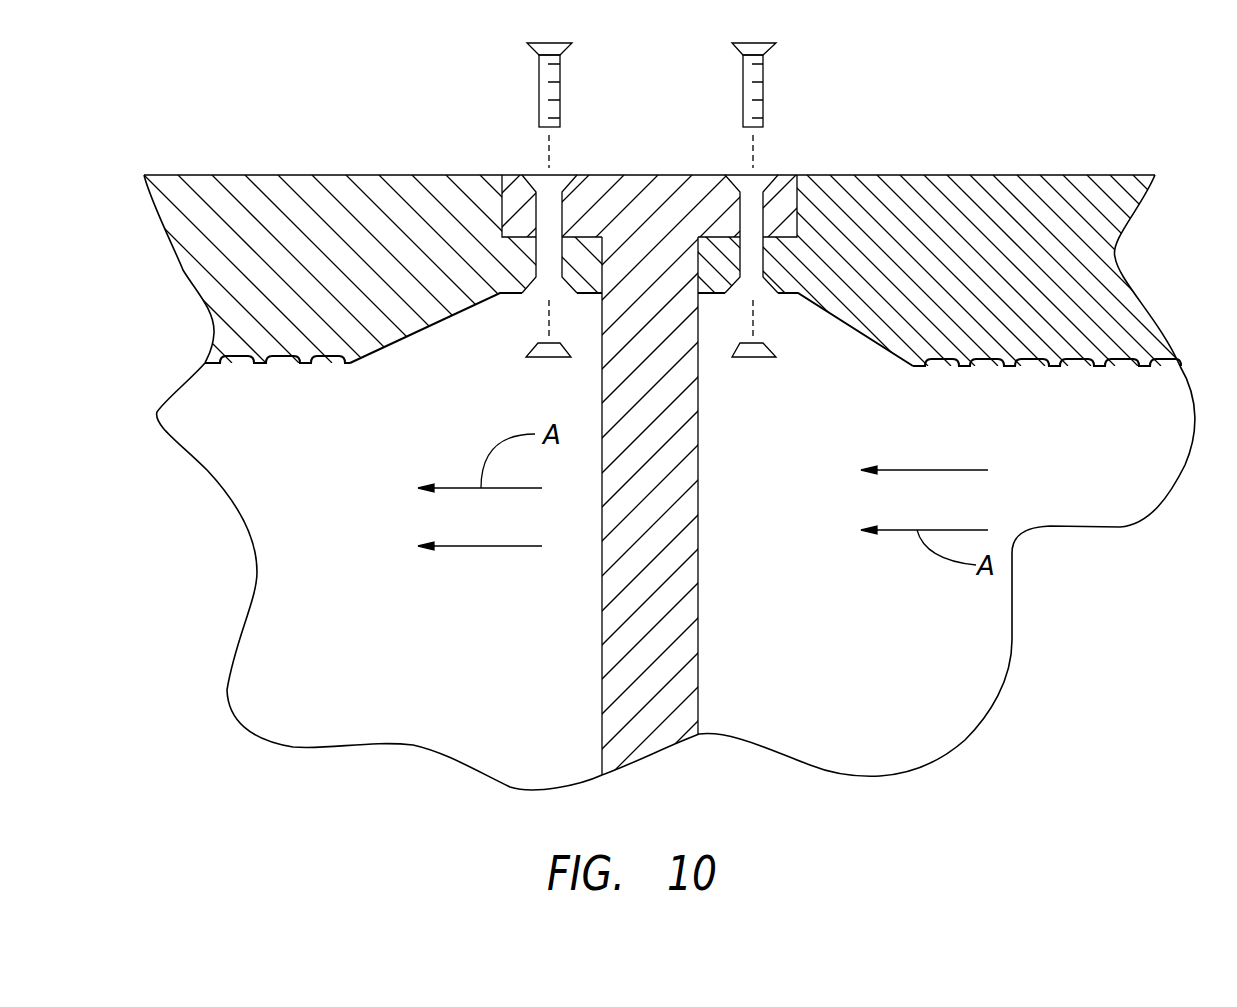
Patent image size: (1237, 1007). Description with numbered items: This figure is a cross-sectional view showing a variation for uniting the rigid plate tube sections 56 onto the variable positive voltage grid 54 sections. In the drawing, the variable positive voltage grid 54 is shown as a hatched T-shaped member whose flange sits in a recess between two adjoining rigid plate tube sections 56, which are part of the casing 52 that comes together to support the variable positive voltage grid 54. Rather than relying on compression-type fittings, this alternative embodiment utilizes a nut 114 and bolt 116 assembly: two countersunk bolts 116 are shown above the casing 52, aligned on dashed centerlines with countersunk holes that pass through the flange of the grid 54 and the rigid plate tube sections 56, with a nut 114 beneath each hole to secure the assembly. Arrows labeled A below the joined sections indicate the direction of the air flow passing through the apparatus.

The casing 52 is at (1089, 99).
The variable positive voltage grid 54 is at (622, 153).
The rigid plate tube sections 56 is at (342, 135).
The nut 114 is at (776, 352).
The bolt 116 is at (763, 92).